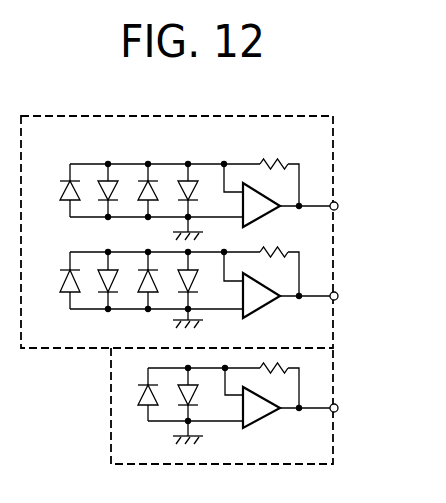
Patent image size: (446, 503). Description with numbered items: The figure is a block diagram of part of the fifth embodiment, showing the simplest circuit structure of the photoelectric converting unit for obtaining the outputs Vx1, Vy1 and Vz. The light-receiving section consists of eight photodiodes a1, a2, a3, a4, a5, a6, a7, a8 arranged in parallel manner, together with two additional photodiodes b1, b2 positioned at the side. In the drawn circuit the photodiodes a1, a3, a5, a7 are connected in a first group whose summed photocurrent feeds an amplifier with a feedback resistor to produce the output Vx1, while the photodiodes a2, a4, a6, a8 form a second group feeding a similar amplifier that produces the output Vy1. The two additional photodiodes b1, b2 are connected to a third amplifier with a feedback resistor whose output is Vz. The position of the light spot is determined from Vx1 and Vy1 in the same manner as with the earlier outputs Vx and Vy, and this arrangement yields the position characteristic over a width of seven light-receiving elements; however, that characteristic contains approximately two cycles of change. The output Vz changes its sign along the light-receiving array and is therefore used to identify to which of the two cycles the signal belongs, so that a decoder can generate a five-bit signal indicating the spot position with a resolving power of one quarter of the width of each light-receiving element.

The photodiode a1 is at (62, 180).
The photodiode a2 is at (66, 294).
The photodiode a3 is at (103, 178).
The photodiode a4 is at (104, 294).
The photodiode a5 is at (143, 178).
The photodiode a6 is at (147, 294).
The photodiode a7 is at (182, 178).
The photodiode a8 is at (193, 290).
The additional photodiode b1 is at (147, 406).
The additional photodiode b2 is at (191, 405).
The output Vx1 is at (355, 206).
The output Vy1 is at (355, 297).
The output Vz is at (351, 409).